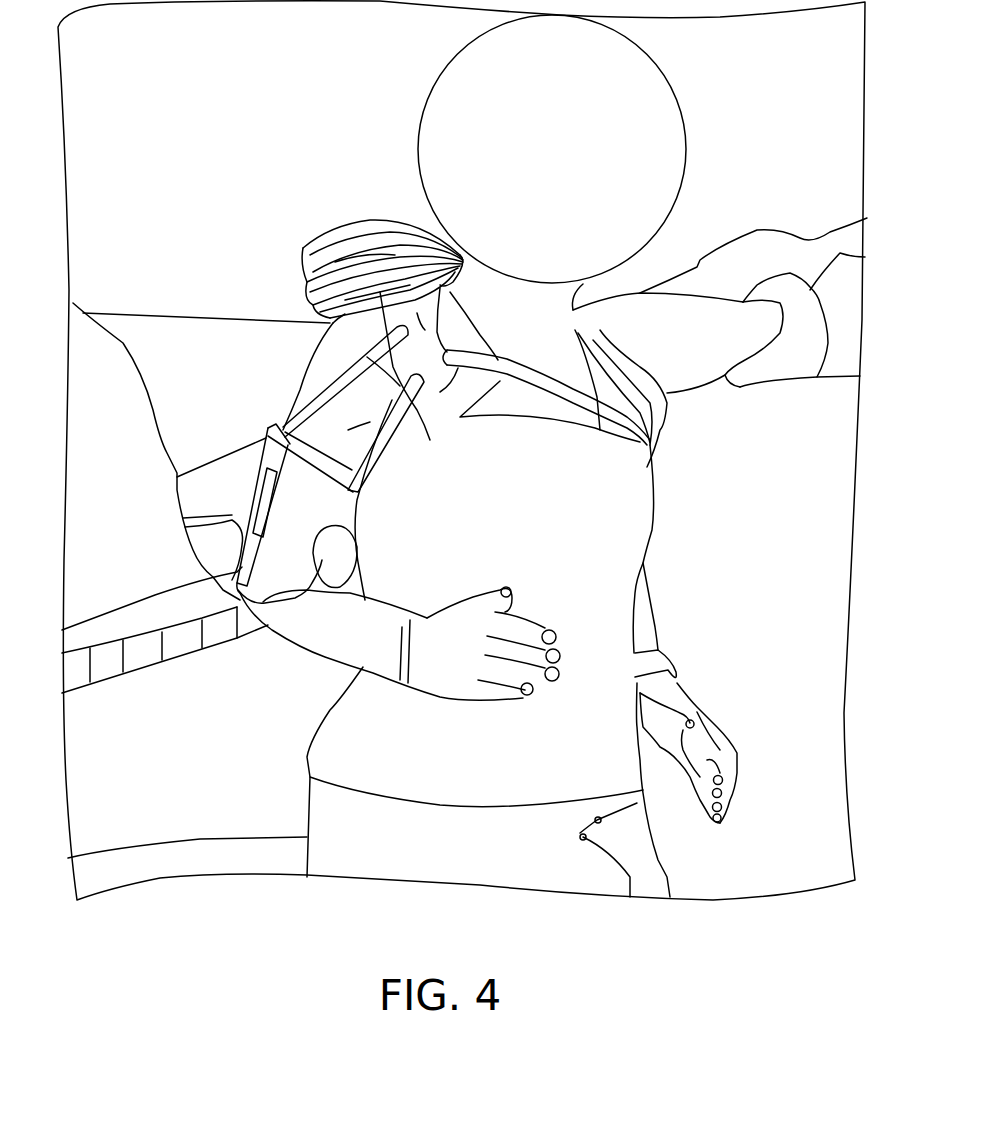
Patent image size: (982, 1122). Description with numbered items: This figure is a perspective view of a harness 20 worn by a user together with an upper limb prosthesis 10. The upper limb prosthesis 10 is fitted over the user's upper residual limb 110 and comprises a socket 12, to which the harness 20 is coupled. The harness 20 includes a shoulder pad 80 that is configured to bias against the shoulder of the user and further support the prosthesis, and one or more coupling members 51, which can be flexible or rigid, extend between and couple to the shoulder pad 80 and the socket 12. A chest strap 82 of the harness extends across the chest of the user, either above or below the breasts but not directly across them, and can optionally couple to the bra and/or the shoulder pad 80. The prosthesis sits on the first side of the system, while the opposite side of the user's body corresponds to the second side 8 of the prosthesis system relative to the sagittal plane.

The second side 8 is at (288, 239).
The upper limb prosthesis 10 is at (360, 640).
The socket 12 is at (287, 436).
The harness 20 is at (417, 313).
The coupling members 51 is at (393, 410).
The shoulder pad 80 is at (330, 300).
The chest strap 82 is at (620, 425).
The upper residual limb 110 is at (353, 427).